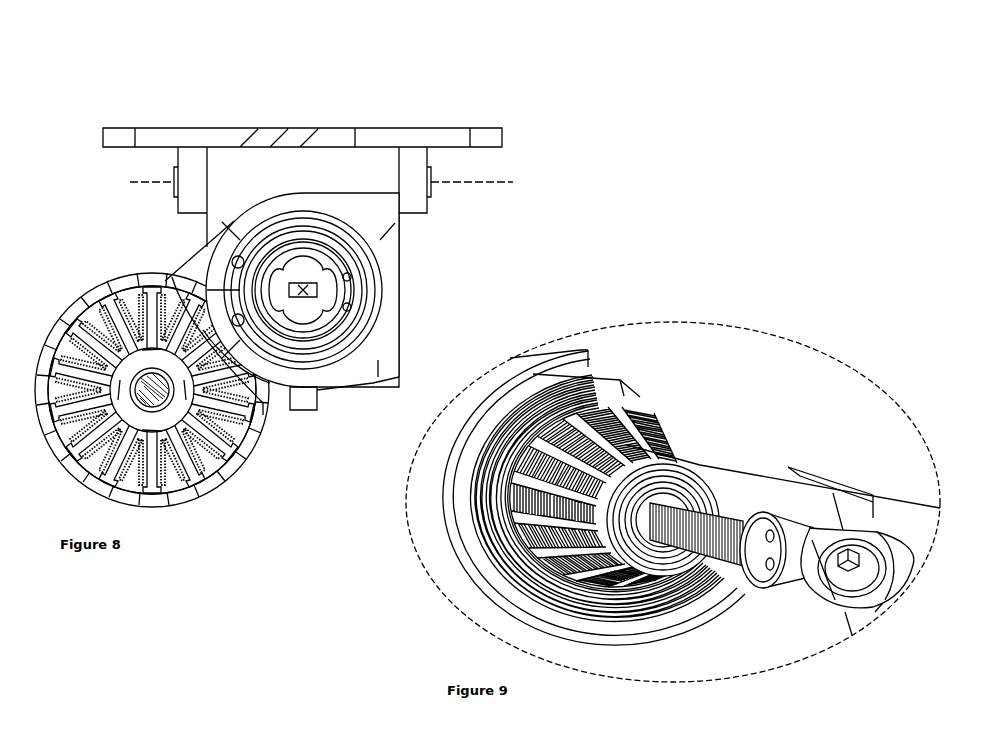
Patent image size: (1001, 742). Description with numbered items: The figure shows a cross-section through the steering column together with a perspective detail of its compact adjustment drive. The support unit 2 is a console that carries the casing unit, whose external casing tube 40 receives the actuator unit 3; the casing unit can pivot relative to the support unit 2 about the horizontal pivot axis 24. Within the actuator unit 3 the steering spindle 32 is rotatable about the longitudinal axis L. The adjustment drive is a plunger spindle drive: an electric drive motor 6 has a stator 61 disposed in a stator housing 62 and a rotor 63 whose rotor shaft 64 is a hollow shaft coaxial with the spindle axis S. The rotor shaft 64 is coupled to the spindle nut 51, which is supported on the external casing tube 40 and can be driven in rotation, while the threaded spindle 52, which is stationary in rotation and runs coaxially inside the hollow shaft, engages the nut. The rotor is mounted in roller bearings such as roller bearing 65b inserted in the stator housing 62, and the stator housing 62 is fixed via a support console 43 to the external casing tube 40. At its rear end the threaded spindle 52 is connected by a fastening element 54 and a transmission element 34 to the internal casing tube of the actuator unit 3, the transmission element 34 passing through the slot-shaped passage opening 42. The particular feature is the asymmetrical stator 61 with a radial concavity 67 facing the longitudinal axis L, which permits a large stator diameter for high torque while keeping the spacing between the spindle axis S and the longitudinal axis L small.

In FIG. 8, the support unit 2 is at (307, 140).
In FIG. 8, the pivot axis 24 is at (505, 183).
In FIG. 8, the drive motor 6 is at (79, 283).
In FIG. 8, the stator housing 62 is at (109, 290).
In FIG. 9, the stator housing 62 is at (535, 372).
In FIG. 8, the stator 61 is at (68, 348).
In FIG. 9, the stator 61 is at (622, 400).
In FIG. 8, the rotor 63 is at (203, 460).
In FIG. 8, the rotor shaft 64 is at (147, 424).
In FIG. 8, the spindle nut 51 is at (193, 478).
In FIG. 8, the threaded spindle 52 is at (225, 406).
In FIG. 9, the threaded spindle 52 is at (728, 577).
In FIG. 8, the spindle axis S is at (120, 385).
In FIG. 8, the support console 43 is at (197, 272).
In FIG. 8, the external casing tube 40 is at (388, 322).
In FIG. 9, the external casing tube 40 is at (768, 385).
In FIG. 8, the actuator unit 3 is at (393, 352).
In FIG. 8, the steering spindle 32 is at (353, 268).
In FIG. 8, the longitudinal axis L is at (310, 290).
In FIG. 8, the radial concavity 67 is at (230, 343).
In FIG. 9, the radial concavity 67 is at (666, 428).
In FIG. 9, the roller bearing 65b is at (647, 600).
In FIG. 9, the transmission element 34 is at (903, 517).
In FIG. 9, the passage opening 42 is at (843, 483).
In FIG. 9, the fastening element 54 is at (807, 573).